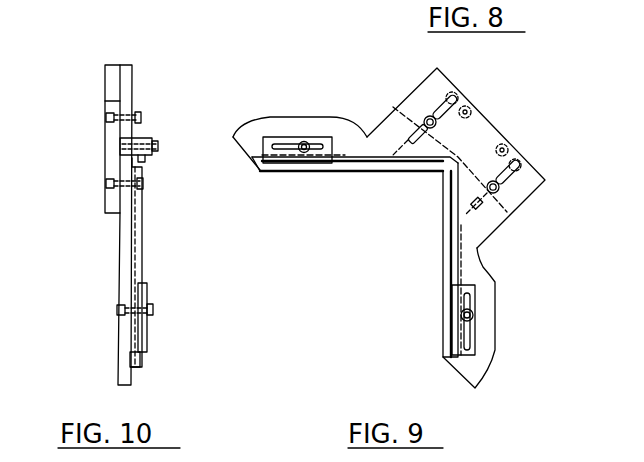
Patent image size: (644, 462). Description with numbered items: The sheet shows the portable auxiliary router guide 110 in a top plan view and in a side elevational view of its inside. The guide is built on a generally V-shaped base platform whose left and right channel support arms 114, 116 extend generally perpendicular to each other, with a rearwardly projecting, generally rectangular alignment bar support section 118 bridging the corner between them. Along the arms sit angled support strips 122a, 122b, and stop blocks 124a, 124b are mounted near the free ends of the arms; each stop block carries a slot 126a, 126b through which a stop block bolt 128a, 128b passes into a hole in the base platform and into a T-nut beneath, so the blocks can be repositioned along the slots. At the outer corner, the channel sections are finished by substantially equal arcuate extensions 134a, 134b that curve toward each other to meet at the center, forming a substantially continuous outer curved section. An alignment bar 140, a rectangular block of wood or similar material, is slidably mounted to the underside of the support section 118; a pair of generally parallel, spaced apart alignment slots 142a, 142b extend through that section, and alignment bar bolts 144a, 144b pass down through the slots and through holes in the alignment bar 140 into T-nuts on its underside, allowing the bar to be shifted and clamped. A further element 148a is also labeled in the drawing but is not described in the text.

In FIG. 10, the portable auxiliary router guide 110 is at (90, 200).
In FIG. 9, the left channel support arm 114 is at (338, 132).
In FIG. 9, the right channel support arm 116 is at (478, 357).
In FIG. 10, the right channel support arm 116 is at (118, 250).
In FIG. 9, the alignment bar support section 118 is at (482, 133).
In FIG. 9, the angled support strip 122a is at (368, 162).
In FIG. 9, the angled support strip 122b is at (453, 267).
In FIG. 9, the stop block 124a is at (253, 150).
In FIG. 10, the stop block 124a is at (147, 345).
In FIG. 9, the stop block 124b is at (478, 370).
In FIG. 9, the slot 126a is at (284, 140).
In FIG. 9, the slot 126b is at (478, 298).
In FIG. 9, the stop block bolt 128a is at (303, 139).
In FIG. 9, the stop block bolt 128b is at (474, 317).
In FIG. 9, the arcuate extension 134a is at (460, 150).
In FIG. 9, the arcuate extension 134b is at (462, 162).
In FIG. 10, the alignment bar 140 is at (108, 137).
In FIG. 9, the alignment slot 142a is at (438, 97).
In FIG. 9, the alignment slot 142b is at (511, 186).
In FIG. 10, the alignment slot 142b is at (147, 137).
In FIG. 9, the alignment bar bolt 144a is at (425, 115).
In FIG. 9, the alignment bar bolt 144b is at (500, 193).
In FIG. 9, the strut 148a is at (548, 461).